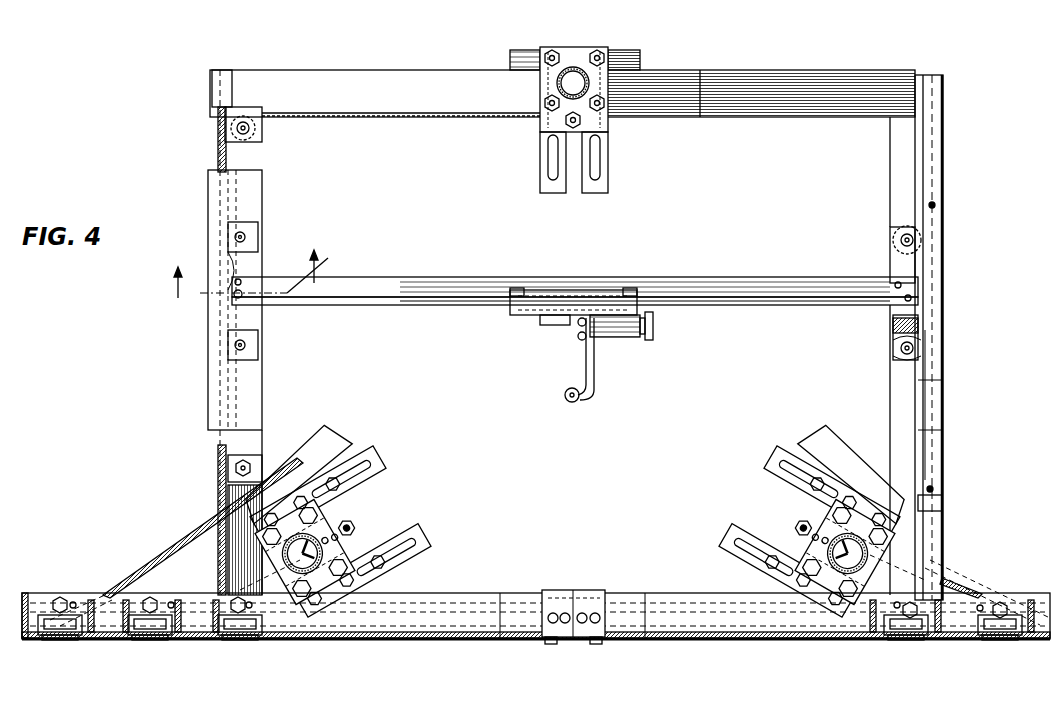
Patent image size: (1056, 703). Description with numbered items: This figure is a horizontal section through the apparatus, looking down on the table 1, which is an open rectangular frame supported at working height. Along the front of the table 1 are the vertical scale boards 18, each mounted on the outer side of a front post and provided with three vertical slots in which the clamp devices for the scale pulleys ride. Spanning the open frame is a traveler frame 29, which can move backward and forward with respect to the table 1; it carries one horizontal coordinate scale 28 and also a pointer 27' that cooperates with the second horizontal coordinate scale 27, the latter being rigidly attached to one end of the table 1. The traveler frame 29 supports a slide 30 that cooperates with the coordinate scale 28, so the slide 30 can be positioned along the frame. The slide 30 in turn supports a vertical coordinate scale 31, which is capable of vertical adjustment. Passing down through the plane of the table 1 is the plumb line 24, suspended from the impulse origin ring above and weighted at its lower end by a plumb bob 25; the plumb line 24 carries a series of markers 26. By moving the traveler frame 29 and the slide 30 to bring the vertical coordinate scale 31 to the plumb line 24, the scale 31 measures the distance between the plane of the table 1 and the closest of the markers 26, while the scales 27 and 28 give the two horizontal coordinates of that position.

The table 1 is at (805, 97).
The scale board 18 is at (112, 641).
The plumb line 24 is at (584, 402).
The plumb bob 25 is at (566, 398).
The marker 26 is at (249, 283).
The horizontal coordinate scale 27 is at (951, 405).
The pointer 27' is at (941, 324).
The horizontal coordinate scale 28 is at (452, 305).
The traveler frame 29 is at (366, 297).
The slide 30 is at (540, 312).
The vertical coordinate scale 31 is at (578, 322).